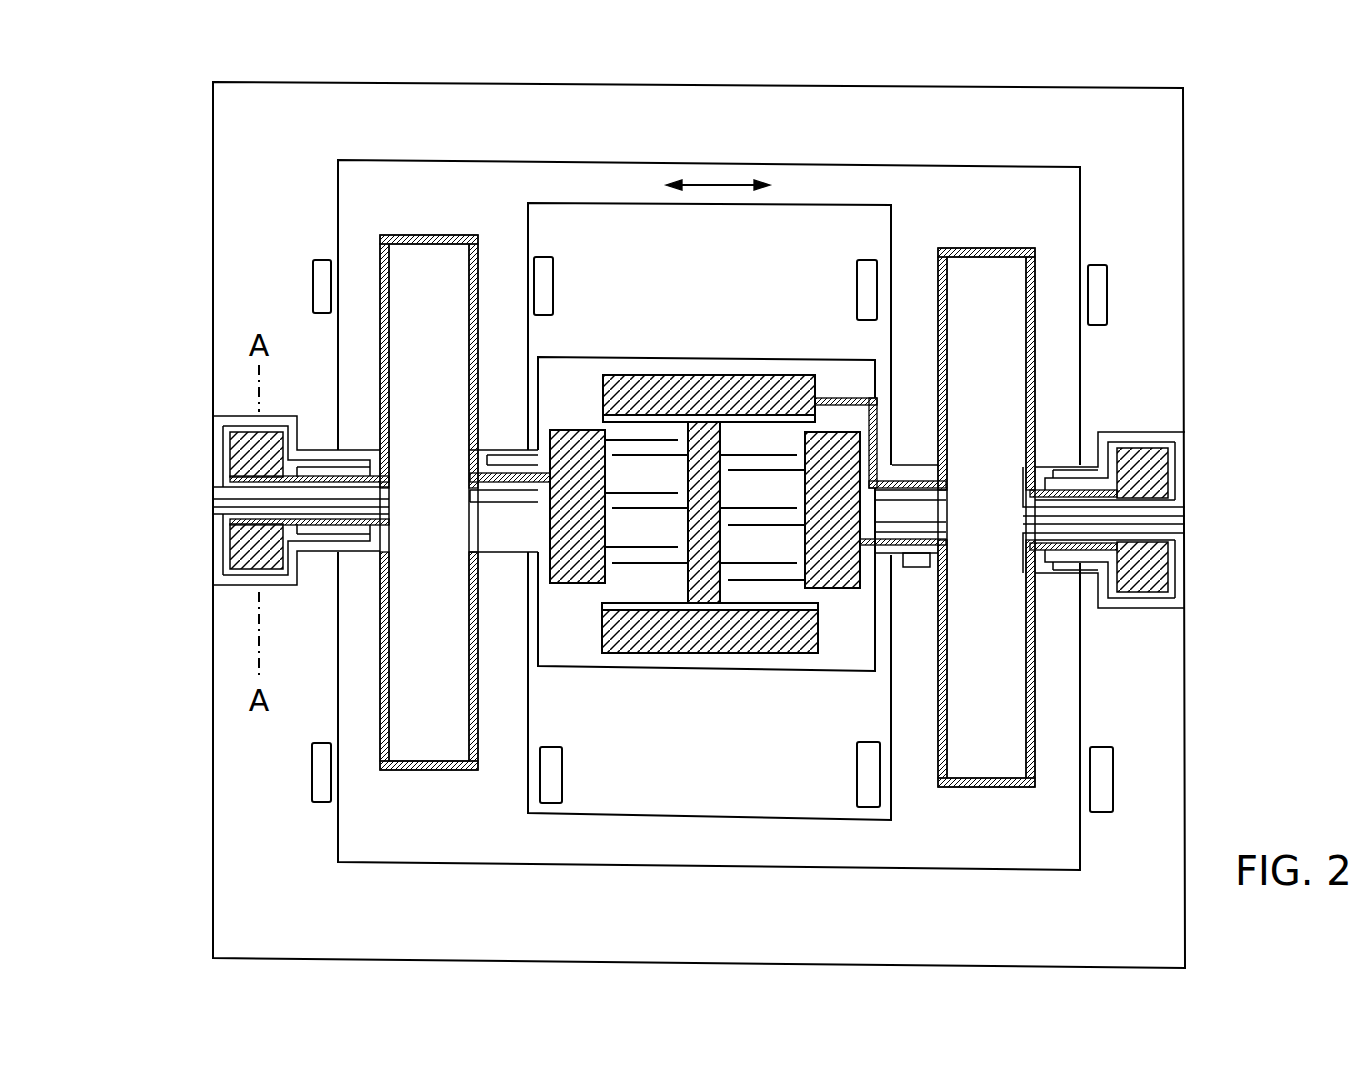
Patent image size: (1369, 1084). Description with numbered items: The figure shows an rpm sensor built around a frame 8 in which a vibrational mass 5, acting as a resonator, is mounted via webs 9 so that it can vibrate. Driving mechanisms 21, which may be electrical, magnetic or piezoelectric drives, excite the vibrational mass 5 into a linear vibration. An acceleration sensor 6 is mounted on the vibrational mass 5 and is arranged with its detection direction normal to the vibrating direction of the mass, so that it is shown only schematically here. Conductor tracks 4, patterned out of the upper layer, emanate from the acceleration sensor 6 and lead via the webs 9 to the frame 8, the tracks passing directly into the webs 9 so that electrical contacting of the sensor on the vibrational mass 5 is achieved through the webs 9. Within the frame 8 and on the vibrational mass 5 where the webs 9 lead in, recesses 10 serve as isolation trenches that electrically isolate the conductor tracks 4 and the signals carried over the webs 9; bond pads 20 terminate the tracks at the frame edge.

The conductor tracks 4 is at (513, 462).
The vibrational mass 5 is at (716, 797).
The acceleration sensor 6 is at (746, 348).
The frame 8 is at (236, 827).
The webs 9 is at (472, 360).
The recesses 10 is at (213, 509).
The bond pad 20 is at (232, 443).
The driving mechanisms 21 is at (318, 283).